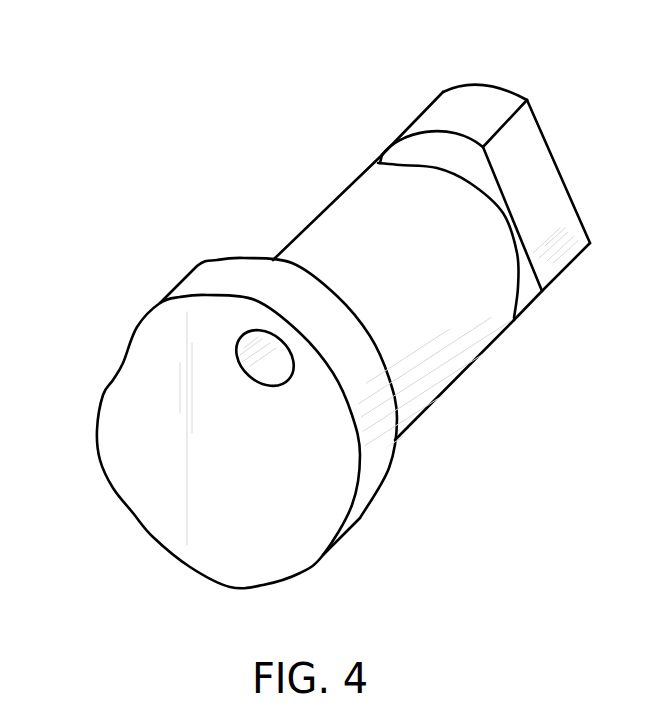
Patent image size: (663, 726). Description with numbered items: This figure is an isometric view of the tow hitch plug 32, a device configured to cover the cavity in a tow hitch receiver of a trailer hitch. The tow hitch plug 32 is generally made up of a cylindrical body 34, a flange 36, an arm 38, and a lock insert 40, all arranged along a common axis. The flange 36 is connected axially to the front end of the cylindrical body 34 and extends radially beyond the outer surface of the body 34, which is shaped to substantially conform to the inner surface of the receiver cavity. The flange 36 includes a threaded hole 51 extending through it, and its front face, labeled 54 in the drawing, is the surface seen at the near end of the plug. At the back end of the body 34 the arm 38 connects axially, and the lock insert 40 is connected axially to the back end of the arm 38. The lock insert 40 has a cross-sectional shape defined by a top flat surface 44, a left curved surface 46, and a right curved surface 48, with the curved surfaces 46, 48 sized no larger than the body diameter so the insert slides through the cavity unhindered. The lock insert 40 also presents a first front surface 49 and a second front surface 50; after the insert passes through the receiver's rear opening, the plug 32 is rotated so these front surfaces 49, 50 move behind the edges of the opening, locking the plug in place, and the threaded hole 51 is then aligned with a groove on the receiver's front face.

The tow hitch plug 32 is at (271, 192).
The cylindrical body 34 is at (447, 352).
The flange 36 is at (103, 394).
The arm 38 is at (493, 200).
The lock insert 40 is at (489, 82).
The top flat surface 44 is at (523, 130).
The left curved surface 46 is at (442, 117).
The right curved surface 48 is at (548, 288).
The first front surface 49 is at (425, 145).
The second front surface 50 is at (530, 288).
The threaded hole 51 is at (263, 373).
The end face 54 is at (175, 505).